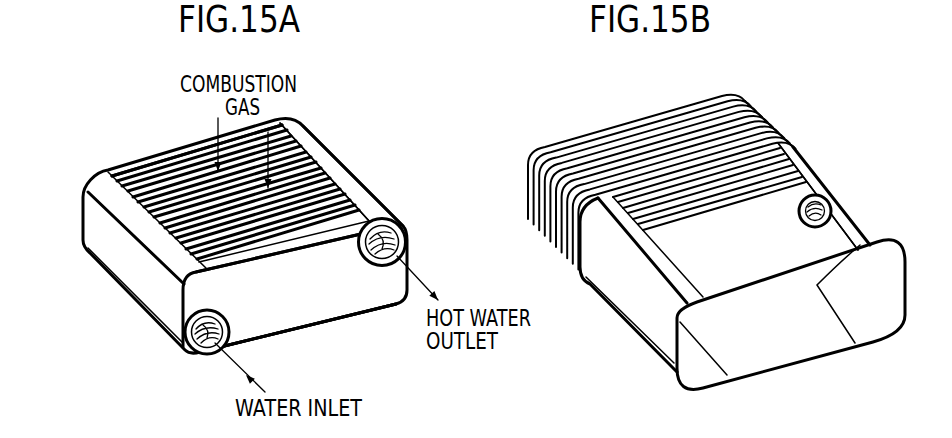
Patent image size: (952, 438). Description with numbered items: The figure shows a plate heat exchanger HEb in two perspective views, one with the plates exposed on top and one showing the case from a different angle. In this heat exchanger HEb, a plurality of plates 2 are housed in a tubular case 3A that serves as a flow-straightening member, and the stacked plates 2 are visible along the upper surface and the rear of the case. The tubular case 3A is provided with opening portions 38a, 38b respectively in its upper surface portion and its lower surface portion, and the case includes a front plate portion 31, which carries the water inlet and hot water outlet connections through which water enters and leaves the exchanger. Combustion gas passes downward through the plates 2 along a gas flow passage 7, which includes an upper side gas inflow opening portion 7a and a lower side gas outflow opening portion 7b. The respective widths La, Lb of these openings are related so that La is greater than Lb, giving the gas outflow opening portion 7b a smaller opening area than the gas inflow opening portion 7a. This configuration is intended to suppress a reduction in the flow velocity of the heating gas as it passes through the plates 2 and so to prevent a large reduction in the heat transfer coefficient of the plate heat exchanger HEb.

In FIG. 15A, the plate heat exchanger HEb is at (96, 142).
In FIG. 15B, the plate heat exchanger HEb is at (569, 118).
In FIG. 15A, the plates 2 is at (160, 185).
In FIG. 15B, the plates 2 is at (721, 128).
In FIG. 15A, the tubular case 3A is at (345, 172).
In FIG. 15B, the tubular case 3A is at (838, 197).
In FIG. 15A, the gas flow passage 7 is at (293, 150).
In FIG. 15A, the gas inflow opening portion 7a is at (182, 163).
In FIG. 15A, the gas outflow opening portion 7b is at (273, 346).
In FIG. 15A, the front plate portion 31 is at (297, 322).
In FIG. 15A, the opening portion 38a is at (305, 165).
In FIG. 15B, the opening portion 38a is at (786, 200).
In FIG. 15B, the opening portion 38b is at (808, 345).
In FIG. 15B, the width of gas inflow opening portion La is at (843, 237).
In FIG. 15B, the width of gas outflow opening portion Lb is at (830, 328).